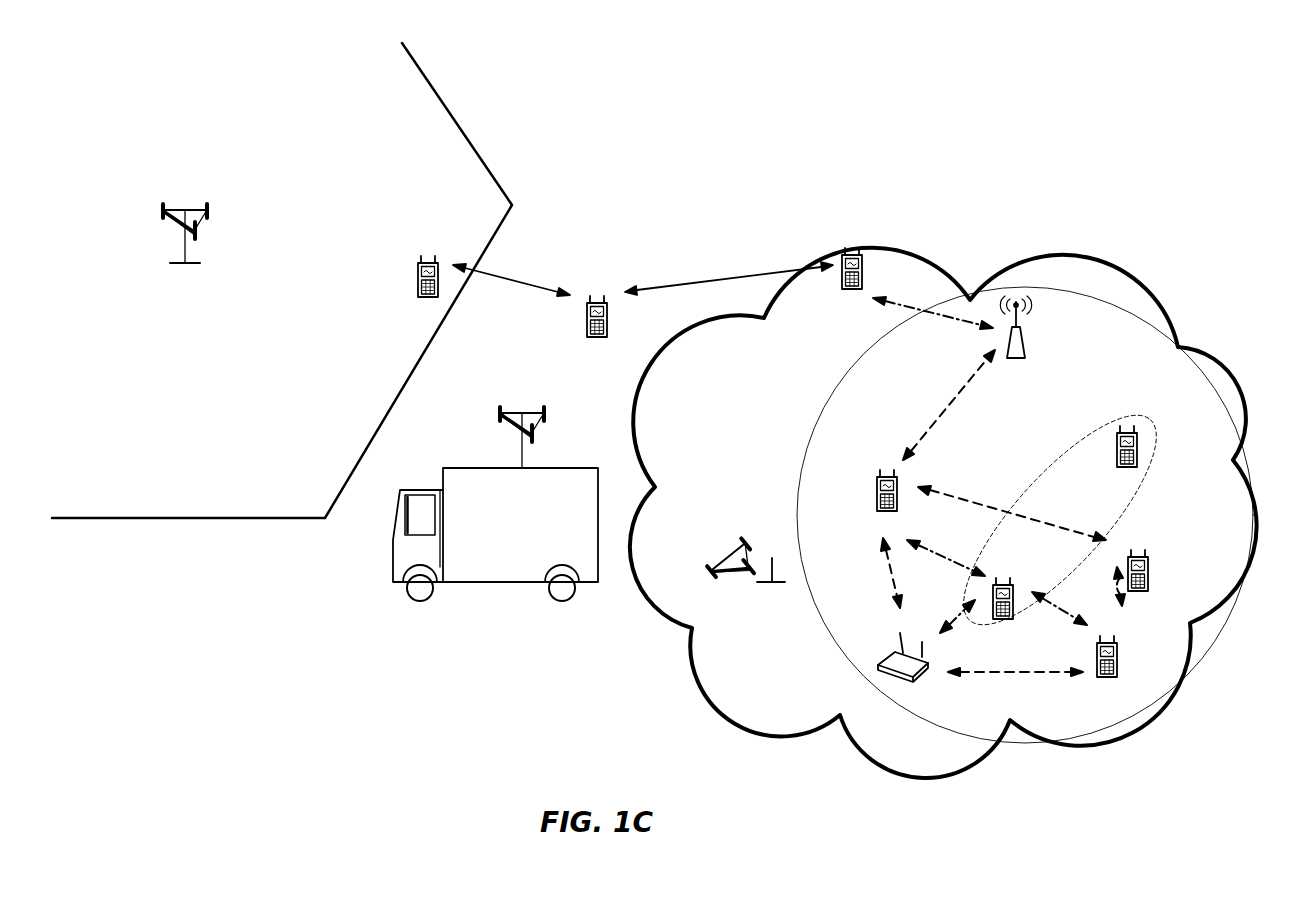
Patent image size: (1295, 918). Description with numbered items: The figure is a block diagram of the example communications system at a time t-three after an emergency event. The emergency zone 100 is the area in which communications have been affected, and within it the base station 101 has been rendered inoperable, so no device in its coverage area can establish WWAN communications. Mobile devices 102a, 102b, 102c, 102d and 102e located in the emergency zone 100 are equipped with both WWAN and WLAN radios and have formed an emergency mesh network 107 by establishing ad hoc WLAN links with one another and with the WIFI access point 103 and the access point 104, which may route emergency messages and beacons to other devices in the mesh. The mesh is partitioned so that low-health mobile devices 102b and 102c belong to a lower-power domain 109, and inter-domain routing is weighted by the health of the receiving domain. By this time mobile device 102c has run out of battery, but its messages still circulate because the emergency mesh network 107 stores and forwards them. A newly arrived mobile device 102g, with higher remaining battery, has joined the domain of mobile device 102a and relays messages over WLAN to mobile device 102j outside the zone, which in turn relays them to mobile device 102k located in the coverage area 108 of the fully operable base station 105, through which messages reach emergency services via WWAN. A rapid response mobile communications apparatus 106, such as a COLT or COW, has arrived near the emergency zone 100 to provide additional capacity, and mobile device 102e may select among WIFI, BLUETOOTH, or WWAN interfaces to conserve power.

The emergency zone 100 is at (1140, 246).
The base station 101 is at (727, 546).
The mobile device 102a is at (887, 511).
The mobile device 102b is at (1003, 620).
The mobile device 102c is at (1127, 469).
The mobile device 102d is at (1138, 588).
The mobile device 102e is at (1107, 677).
The mobile device 102g is at (864, 278).
The mobile device 102j is at (592, 341).
The mobile device 102k is at (423, 299).
The WIFI access point 103 is at (887, 653).
The access point 104 is at (1022, 357).
The base station 105 is at (185, 203).
The mobile communications apparatus 106 is at (455, 462).
The emergency mesh network 107 is at (799, 497).
The coverage area 108 is at (468, 96).
The domain 109 is at (1028, 508).